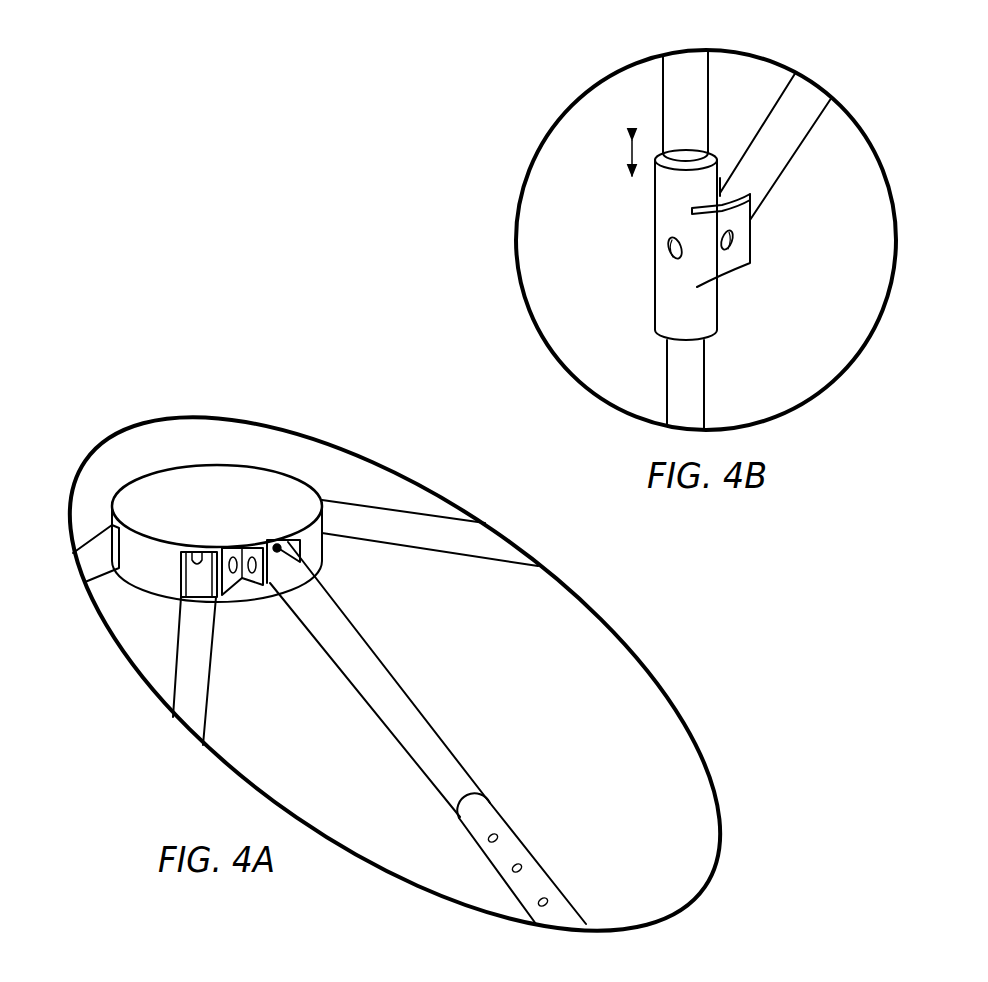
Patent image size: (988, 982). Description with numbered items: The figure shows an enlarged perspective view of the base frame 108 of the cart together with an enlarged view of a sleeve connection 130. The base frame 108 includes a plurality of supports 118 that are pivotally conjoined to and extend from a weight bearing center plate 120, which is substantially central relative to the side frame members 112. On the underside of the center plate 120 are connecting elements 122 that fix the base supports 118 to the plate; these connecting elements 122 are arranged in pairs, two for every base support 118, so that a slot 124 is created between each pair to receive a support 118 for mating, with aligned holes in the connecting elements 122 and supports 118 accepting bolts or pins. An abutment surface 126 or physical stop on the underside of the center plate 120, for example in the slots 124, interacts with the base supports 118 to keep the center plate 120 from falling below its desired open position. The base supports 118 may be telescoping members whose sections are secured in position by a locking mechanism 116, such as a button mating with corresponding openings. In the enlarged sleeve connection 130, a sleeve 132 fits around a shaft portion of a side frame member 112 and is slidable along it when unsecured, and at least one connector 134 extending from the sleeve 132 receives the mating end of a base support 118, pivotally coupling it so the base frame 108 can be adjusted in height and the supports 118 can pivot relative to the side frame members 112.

In FIG. 4A, the base frame 108 is at (490, 615).
In FIG. 4B, the side frame members 112 is at (673, 78).
In FIG. 4A, the locking mechanism 116 is at (530, 827).
In FIG. 4A, the supports 118 is at (408, 522).
In FIG. 4B, the supports 118 is at (784, 107).
In FIG. 4A, the center plate 120 is at (240, 483).
In FIG. 4A, the connecting elements 122 is at (143, 570).
In FIG. 4A, the slot 124 is at (198, 582).
In FIG. 4A, the abutment surface 126 is at (193, 551).
In FIG. 4B, the sleeve connection 130 is at (587, 215).
In FIG. 4B, the sleeve 132 is at (655, 294).
In FIG. 4B, the connector 134 is at (737, 263).